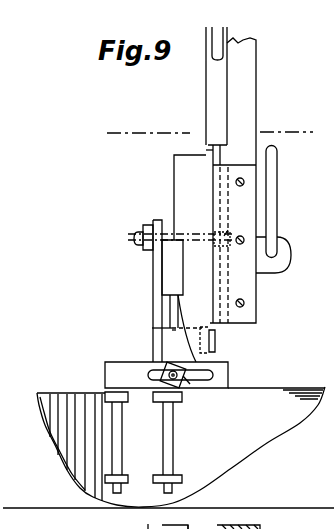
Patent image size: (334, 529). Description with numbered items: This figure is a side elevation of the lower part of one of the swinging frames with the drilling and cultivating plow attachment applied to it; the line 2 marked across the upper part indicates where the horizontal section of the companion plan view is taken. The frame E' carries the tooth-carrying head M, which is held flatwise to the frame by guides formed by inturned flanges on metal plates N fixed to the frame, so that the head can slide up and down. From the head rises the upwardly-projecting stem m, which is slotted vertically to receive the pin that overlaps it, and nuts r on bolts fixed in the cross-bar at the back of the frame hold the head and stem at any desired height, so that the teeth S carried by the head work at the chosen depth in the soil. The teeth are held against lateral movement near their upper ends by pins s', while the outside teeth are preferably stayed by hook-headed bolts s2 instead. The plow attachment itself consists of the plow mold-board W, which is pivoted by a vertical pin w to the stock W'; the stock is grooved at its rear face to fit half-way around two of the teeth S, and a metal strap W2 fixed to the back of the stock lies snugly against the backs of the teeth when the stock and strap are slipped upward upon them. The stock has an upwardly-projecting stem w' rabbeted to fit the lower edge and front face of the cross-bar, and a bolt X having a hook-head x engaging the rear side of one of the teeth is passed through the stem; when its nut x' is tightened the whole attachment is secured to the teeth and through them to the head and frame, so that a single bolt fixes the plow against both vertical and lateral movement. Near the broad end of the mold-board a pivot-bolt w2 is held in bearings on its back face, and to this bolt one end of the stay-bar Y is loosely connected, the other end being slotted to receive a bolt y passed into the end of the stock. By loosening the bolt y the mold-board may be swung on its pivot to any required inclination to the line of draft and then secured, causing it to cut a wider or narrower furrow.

The section line 2 is at (208, 128).
The stem m is at (206, 107).
The frame E' is at (245, 180).
The head M is at (206, 152).
The rod e is at (275, 223).
The nut r is at (228, 229).
The hook-head x is at (229, 250).
The teeth S is at (179, 258).
The bolt X is at (171, 233).
The nut x' is at (131, 237).
The stem w' is at (143, 291).
The pins s' is at (172, 284).
The stock W' is at (164, 343).
The metal strap W2 is at (216, 343).
The stay-bar Y is at (123, 371).
The bolt y is at (148, 375).
The pivot-bolt w2 is at (120, 456).
The vertical pin w is at (171, 442).
The plow mold-board W is at (168, 439).
The metal plates N is at (204, 521).
The hook-headed bolts s2 is at (197, 521).